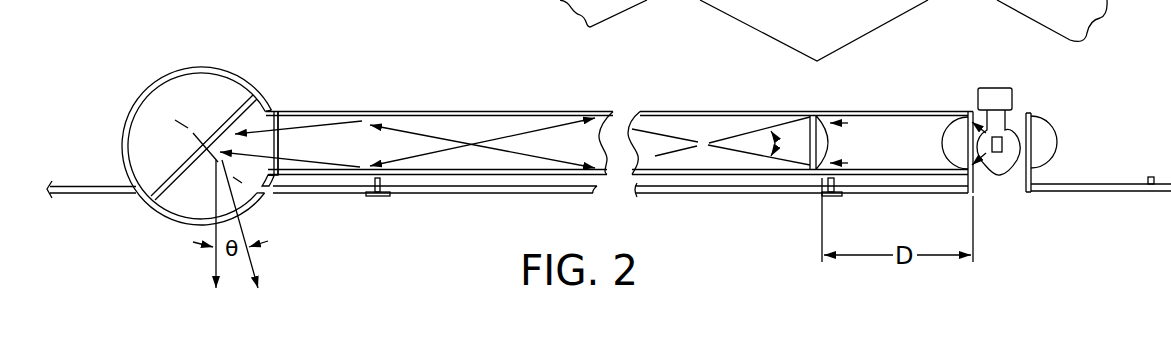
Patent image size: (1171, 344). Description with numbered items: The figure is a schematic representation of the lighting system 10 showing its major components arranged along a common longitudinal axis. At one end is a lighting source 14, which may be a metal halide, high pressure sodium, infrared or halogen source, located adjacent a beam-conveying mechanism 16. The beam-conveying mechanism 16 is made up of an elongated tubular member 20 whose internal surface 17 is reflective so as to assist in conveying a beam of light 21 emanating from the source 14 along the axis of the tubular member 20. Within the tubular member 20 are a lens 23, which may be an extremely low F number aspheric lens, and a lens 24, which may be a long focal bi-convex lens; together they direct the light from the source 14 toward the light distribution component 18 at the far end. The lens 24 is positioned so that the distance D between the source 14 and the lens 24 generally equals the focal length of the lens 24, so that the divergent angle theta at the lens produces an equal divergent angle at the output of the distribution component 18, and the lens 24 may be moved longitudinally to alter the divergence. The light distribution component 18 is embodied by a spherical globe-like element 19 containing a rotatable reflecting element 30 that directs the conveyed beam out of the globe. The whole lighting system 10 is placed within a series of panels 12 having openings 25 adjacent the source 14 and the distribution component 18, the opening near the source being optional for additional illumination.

The lighting system 10 is at (375, 99).
The panels 12 is at (473, 194).
The lighting source 14 is at (963, 103).
The beam-conveying mechanism 16 is at (724, 107).
The internal surface 17 is at (453, 114).
The light distribution component 18 is at (197, 62).
The globe-like element 19 is at (247, 72).
The tubular member 20 is at (513, 112).
The beam of light 21 is at (880, 150).
The lens 23 is at (953, 148).
The lens 24 is at (828, 115).
The openings 25 is at (270, 196).
The reflecting element 30 is at (175, 173).